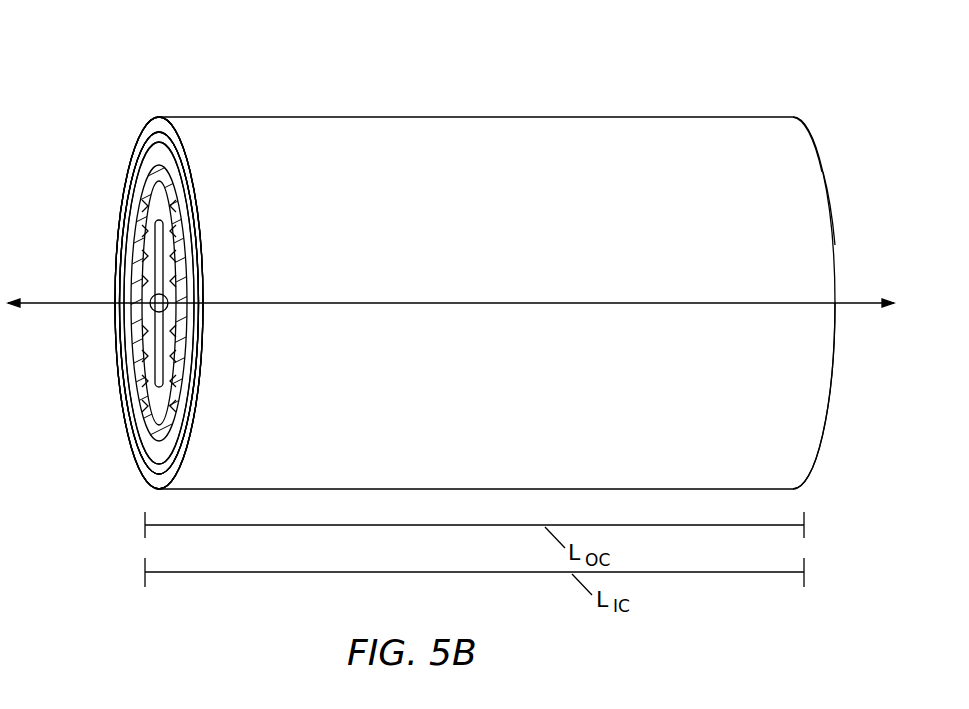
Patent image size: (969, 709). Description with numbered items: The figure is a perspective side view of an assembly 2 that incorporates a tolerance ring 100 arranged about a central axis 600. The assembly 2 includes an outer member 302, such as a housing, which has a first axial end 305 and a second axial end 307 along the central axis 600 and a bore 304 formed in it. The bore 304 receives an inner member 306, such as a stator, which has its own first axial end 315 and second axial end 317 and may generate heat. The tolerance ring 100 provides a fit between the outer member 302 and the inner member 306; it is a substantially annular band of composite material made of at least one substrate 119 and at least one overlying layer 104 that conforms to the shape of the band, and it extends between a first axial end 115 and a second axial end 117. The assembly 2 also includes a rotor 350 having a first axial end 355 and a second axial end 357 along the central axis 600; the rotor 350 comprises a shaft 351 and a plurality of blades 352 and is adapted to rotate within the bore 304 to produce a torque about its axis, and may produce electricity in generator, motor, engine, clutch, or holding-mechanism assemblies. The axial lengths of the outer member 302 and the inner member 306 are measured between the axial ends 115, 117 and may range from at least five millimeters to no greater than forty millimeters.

The assembly 2 is at (795, 40).
The tolerance ring 100 is at (118, 284).
The overlying layer 104 is at (121, 242).
The first axial end 115 is at (207, 355).
The second axial end 117 is at (832, 385).
The substrate 119 is at (117, 268).
The outer member 302 is at (118, 378).
The bore 304 is at (147, 425).
The first axial end 305 is at (193, 185).
The inner member 306 is at (140, 190).
The second axial end 307 is at (817, 145).
The first axial end 315 is at (203, 245).
The second axial end 317 is at (823, 172).
The rotor 350 is at (117, 347).
The shaft 351 is at (150, 309).
The blades 352 is at (150, 297).
The first axial end 355 is at (205, 285).
The second axial end 357 is at (835, 243).
The central axis 600 is at (845, 302).